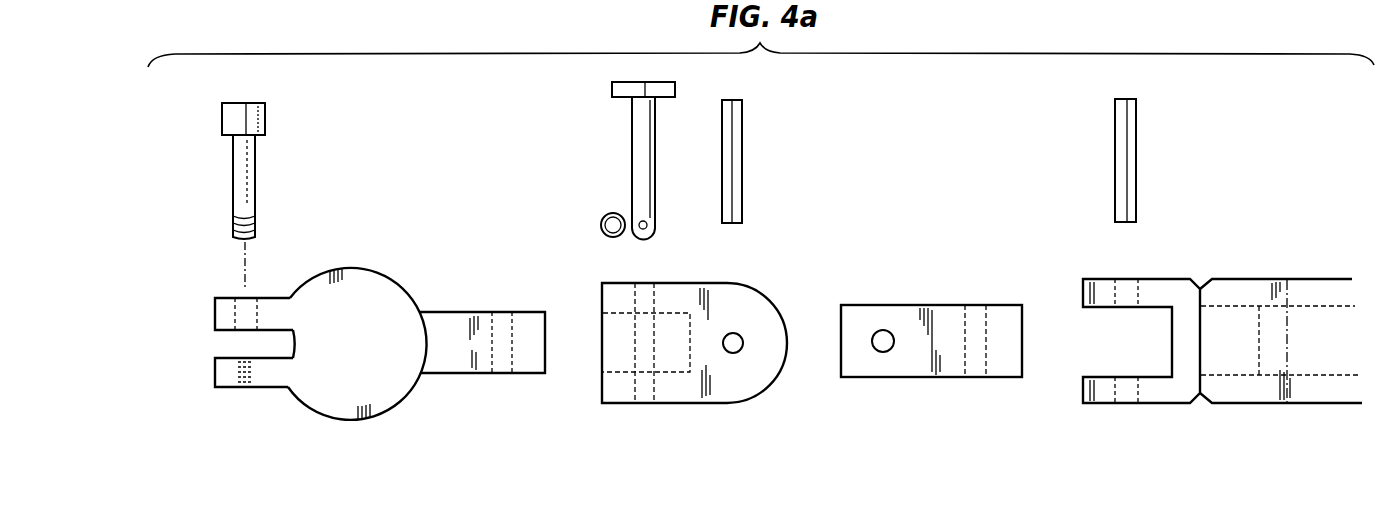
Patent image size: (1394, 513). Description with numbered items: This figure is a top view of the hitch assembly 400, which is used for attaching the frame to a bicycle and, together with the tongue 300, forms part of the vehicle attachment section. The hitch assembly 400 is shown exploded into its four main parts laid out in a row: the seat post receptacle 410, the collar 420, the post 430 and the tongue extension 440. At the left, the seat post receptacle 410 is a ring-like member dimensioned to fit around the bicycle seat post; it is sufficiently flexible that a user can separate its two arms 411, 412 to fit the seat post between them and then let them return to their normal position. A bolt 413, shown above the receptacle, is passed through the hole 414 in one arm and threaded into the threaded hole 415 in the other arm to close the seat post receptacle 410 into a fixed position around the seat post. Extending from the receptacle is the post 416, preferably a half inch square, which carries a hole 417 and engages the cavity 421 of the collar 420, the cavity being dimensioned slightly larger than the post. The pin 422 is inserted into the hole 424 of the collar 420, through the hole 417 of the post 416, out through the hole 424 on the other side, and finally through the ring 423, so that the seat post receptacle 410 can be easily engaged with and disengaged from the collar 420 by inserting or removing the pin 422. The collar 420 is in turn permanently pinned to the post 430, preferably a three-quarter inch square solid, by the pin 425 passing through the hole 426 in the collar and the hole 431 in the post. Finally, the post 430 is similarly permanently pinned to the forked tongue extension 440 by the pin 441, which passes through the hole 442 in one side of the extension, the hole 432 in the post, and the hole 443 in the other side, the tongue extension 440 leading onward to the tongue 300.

The tongue 300 is at (1350, 306).
The hitch assembly 400 is at (198, 343).
The seat post receptacle 410 is at (377, 421).
The arm 411 is at (268, 297).
The arm 412 is at (275, 389).
The bolt 413 is at (293, 106).
The hole 414 is at (245, 331).
The threaded hole 415 is at (245, 389).
The post 416 is at (460, 375).
The hole 417 is at (503, 311).
The collar 420 is at (717, 404).
The cavity 421 is at (620, 373).
The pin 422 is at (656, 160).
The ring 423 is at (600, 227).
The hole 424 is at (655, 295).
The pin 425 is at (743, 142).
The hole 426 is at (744, 337).
The post 430 is at (933, 378).
The hole 431 is at (883, 353).
The hole 432 is at (977, 304).
The tongue extension 440 is at (1192, 411).
The pin 441 is at (1137, 142).
The hole 442 is at (1125, 278).
The hole 443 is at (1125, 404).